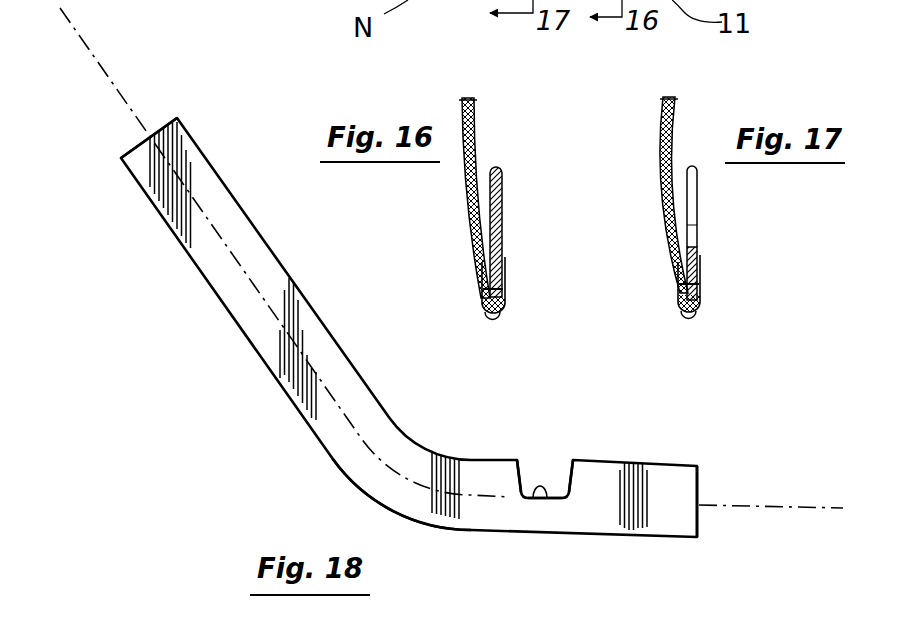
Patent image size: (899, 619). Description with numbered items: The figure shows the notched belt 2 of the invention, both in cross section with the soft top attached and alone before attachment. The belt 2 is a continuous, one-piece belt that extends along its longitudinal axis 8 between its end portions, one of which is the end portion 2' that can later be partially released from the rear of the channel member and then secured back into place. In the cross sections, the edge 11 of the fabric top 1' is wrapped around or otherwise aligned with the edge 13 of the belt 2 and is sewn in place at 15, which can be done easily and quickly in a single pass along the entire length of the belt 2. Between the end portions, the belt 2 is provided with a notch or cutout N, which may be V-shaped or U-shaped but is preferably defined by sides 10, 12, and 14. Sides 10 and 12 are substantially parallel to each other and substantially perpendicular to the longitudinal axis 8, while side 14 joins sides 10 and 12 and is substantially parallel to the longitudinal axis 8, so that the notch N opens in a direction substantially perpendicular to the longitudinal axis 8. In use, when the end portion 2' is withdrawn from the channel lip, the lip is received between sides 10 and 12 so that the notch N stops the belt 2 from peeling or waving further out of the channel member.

In FIG. 16, the fabric top 1' is at (492, 196).
In FIG. 17, the fabric top 1' is at (634, 195).
In FIG. 16, the notched belt 2 is at (520, 232).
In FIG. 17, the notched belt 2 is at (718, 233).
In FIG. 18, the notched belt 2 is at (407, 327).
In FIG. 18, the end portion 2' is at (701, 469).
In FIG. 18, the longitudinal axis 8 is at (112, 78).
In FIG. 18, the side 10 is at (575, 468).
In FIG. 16, the edge 11 is at (491, 320).
In FIG. 17, the edge 11 is at (687, 316).
In FIG. 18, the side 12 is at (519, 466).
In FIG. 16, the edge 13 is at (506, 298).
In FIG. 17, the edge 13 is at (702, 298).
In FIG. 18, the edge 13 is at (323, 448).
In FIG. 18, the side 14 is at (539, 493).
In FIG. 16, the sewing location 15 is at (490, 290).
In FIG. 17, the sewing location 15 is at (681, 285).
In FIG. 17, the notch N is at (697, 215).
In FIG. 18, the notch N is at (552, 479).